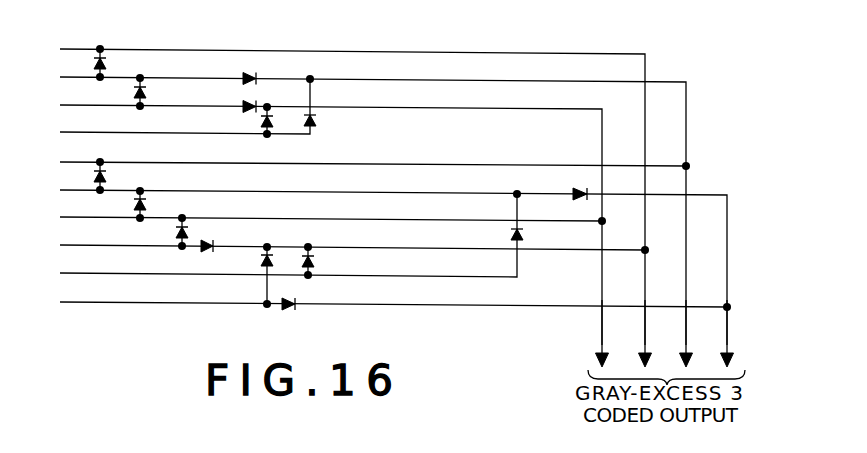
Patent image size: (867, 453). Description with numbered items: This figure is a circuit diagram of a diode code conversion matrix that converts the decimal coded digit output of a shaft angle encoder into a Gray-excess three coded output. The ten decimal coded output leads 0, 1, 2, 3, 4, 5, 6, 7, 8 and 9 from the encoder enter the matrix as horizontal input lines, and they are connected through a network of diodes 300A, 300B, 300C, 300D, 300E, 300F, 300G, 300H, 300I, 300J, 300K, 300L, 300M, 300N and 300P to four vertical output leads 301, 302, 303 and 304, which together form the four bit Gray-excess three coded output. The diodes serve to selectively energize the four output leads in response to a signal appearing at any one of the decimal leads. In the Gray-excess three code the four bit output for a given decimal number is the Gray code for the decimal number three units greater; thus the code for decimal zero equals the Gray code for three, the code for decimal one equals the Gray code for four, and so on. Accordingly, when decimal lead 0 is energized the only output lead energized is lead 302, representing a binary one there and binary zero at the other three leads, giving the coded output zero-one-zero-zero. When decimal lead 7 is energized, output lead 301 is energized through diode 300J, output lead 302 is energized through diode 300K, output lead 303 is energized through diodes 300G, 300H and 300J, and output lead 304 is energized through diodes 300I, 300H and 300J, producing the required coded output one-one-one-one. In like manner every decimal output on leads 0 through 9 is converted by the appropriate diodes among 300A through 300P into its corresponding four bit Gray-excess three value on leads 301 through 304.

The decimal coded output lead 0 is at (342, 201).
The decimal coded output lead 1 is at (363, 215).
The decimal coded output lead 2 is at (321, 229).
The decimal coded output lead 3 is at (173, 109).
The decimal coded output lead 4 is at (359, 161).
The decimal coded output lead 5 is at (383, 272).
The decimal coded output lead 6 is at (317, 216).
The decimal coded output lead 7 is at (339, 244).
The decimal coded output lead 8 is at (277, 237).
The decimal coded output lead 9 is at (380, 301).
The diode 300A is at (107, 64).
The diode 300B is at (135, 92).
The diode 300C is at (252, 73).
The diode 300D is at (248, 100).
The diode 300E is at (261, 120).
The diode 300F is at (316, 121).
The diode 300G is at (107, 176).
The diode 300H is at (147, 204).
The diode 300I is at (582, 190).
The diode 300J is at (176, 232).
The diode 300K is at (211, 242).
The diode 300L is at (512, 238).
The diode 300M is at (262, 263).
The diode 300N is at (313, 263).
The diode 300P is at (295, 300).
The output lead 301 is at (600, 322).
The output lead 302 is at (643, 320).
The output lead 303 is at (686, 331).
The output lead 304 is at (728, 342).